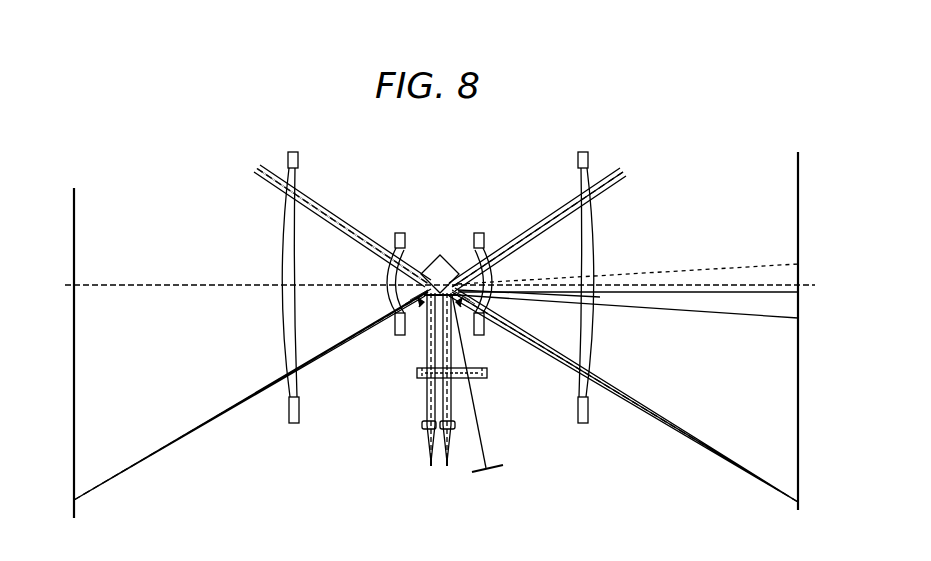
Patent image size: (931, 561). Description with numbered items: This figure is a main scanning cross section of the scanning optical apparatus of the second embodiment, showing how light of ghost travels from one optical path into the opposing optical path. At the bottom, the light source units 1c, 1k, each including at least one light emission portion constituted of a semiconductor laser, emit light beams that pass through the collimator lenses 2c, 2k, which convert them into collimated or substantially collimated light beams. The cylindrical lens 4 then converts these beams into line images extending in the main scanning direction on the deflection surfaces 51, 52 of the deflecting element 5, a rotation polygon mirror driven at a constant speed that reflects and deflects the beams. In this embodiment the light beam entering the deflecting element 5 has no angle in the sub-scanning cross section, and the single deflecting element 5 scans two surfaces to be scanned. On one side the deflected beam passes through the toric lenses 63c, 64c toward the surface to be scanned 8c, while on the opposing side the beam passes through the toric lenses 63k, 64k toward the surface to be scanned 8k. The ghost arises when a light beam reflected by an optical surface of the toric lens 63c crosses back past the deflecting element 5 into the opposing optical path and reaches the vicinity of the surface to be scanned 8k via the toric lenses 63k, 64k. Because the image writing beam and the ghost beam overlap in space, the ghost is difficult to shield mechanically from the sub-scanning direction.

The light source unit 1c is at (430, 468).
The light source unit 1k is at (448, 468).
The collimator lens 2c is at (421, 425).
The collimator lens 2k is at (452, 431).
The cylindrical lens 4 is at (478, 380).
The deflecting element 5 is at (438, 253).
The deflection surface 51 is at (460, 308).
The deflection surface 52 is at (420, 308).
The toric lens 63c is at (400, 233).
The toric lens 63k is at (479, 233).
The toric lens 64c is at (294, 152).
The toric lens 64k is at (583, 152).
The surface to be scanned 8c is at (76, 510).
The surface to be scanned 8k is at (796, 504).